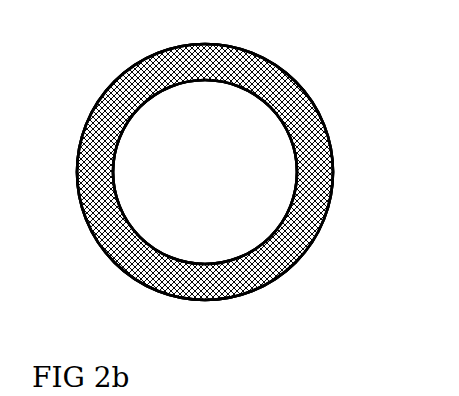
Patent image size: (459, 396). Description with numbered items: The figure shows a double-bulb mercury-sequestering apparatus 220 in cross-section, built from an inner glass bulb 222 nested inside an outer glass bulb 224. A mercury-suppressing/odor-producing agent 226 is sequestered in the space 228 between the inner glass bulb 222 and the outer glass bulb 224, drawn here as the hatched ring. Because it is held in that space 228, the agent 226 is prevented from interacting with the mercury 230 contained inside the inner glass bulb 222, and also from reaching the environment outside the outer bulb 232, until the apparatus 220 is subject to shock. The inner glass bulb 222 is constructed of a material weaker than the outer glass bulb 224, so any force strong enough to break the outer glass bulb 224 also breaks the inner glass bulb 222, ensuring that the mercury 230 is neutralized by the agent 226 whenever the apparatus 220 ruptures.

The double-bulb mercury-sequestering apparatus 220 is at (110, 52).
The inner glass bulb 222 is at (262, 100).
The outer glass bulb 224 is at (135, 279).
The mercury-suppressing/odor-producing agent 226 is at (242, 280).
The space 228 is at (291, 249).
The mercury 230 is at (273, 173).
The environment outside the outer bulb 232 is at (336, 94).